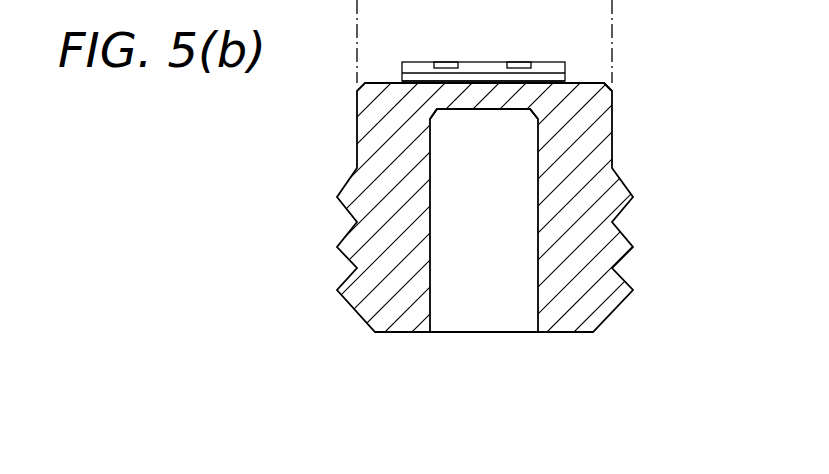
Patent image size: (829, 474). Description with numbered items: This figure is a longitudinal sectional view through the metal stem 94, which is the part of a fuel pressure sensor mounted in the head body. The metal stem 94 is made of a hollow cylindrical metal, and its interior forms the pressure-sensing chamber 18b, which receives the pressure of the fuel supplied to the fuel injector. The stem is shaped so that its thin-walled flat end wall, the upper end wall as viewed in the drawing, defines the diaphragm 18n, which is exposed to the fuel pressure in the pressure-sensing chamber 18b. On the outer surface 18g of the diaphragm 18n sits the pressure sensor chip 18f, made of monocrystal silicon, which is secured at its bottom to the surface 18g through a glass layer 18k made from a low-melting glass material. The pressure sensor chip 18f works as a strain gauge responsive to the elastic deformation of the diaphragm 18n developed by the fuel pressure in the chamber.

The metal stem 94 is at (640, 130).
The pressure-sensing chamber 18b is at (480, 237).
The diaphragm 18n is at (480, 100).
The pressure sensor chip 18f is at (543, 62).
The glass layer 18k is at (420, 78).
The surface of the diaphragm 18g is at (600, 82).